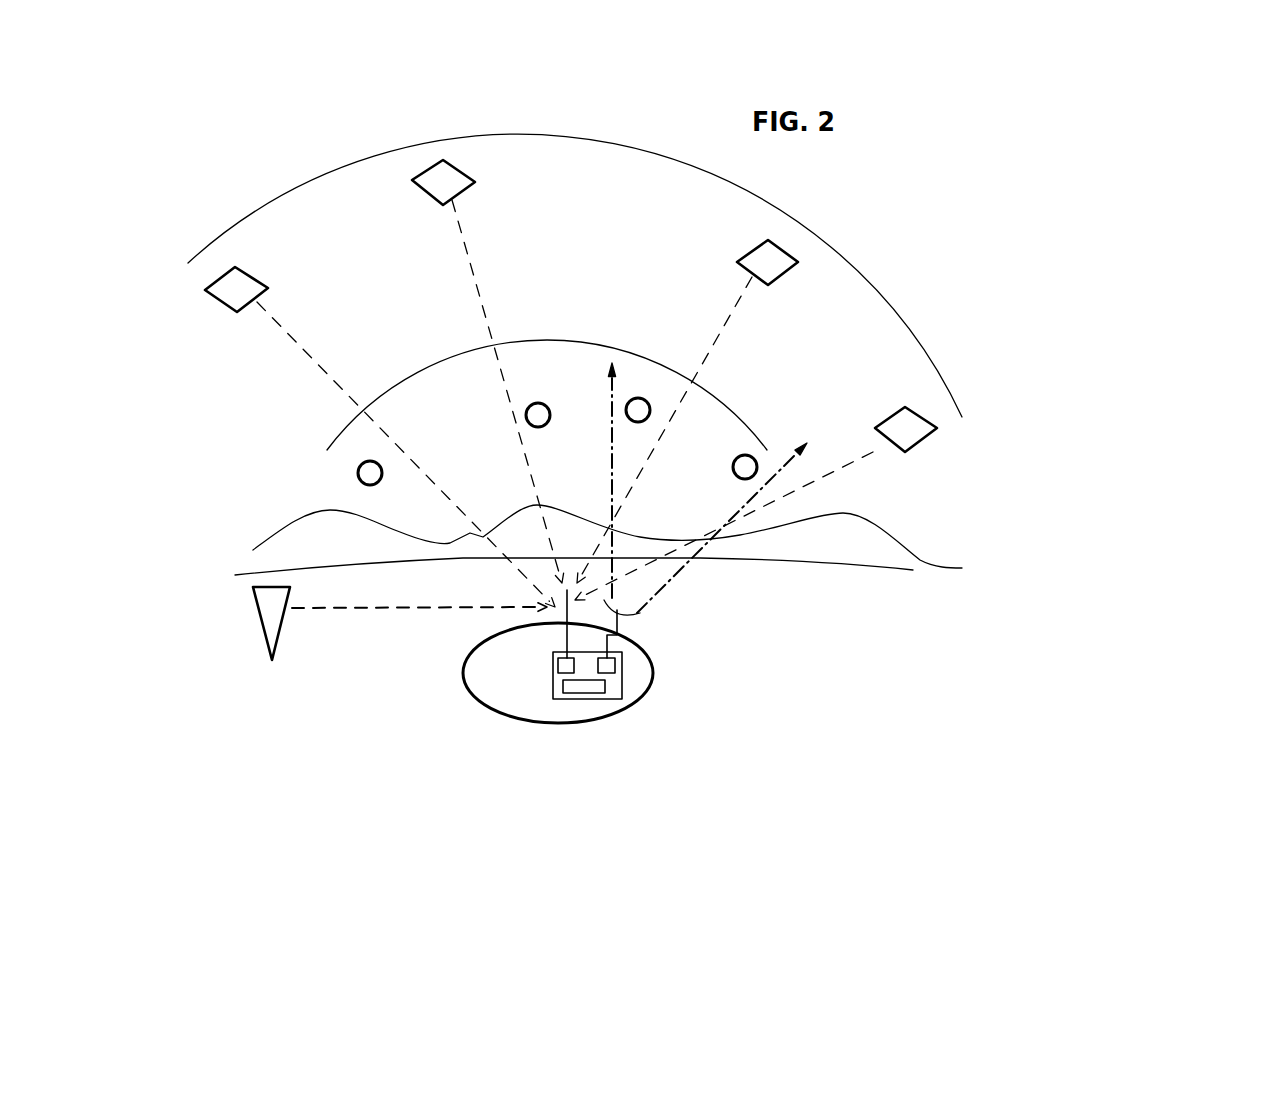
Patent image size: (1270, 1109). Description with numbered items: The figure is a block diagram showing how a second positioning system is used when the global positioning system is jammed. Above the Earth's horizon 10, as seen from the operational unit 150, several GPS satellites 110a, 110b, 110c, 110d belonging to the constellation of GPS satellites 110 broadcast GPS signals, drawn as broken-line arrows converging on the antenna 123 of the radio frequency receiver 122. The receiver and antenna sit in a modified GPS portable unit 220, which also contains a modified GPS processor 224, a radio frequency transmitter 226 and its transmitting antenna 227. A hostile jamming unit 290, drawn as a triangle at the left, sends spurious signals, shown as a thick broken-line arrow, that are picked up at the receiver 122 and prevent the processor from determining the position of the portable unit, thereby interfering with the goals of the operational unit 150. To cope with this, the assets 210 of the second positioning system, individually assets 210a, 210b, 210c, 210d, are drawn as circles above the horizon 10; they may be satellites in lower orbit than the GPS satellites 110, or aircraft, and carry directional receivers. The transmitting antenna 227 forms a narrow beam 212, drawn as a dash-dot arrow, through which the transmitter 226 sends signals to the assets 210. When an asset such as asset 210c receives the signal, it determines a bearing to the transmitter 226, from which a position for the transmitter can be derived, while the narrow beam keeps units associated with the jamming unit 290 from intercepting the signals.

The Earth's horizon 10 is at (885, 545).
The GPS satellites 110 is at (418, 143).
The satellite 110a is at (247, 285).
The satellite 110b is at (452, 180).
The satellite 110c is at (757, 257).
The satellite 110d is at (893, 427).
The radio frequency receiver 122 is at (567, 665).
The antenna 123 is at (563, 642).
The operational unit 150 is at (487, 667).
The assets of second positioning system 210 is at (338, 433).
The asset 210a is at (363, 473).
The asset 210b is at (558, 392).
The asset 210c is at (640, 408).
The asset 210d is at (742, 463).
The narrow beam 212 is at (672, 580).
The modified GPS portable unit 220 is at (650, 653).
The modified GPS processor 224 is at (628, 685).
The radio frequency transmitter 226 is at (627, 668).
The transmitting antenna 227 is at (617, 623).
The jamming unit 290 is at (263, 620).